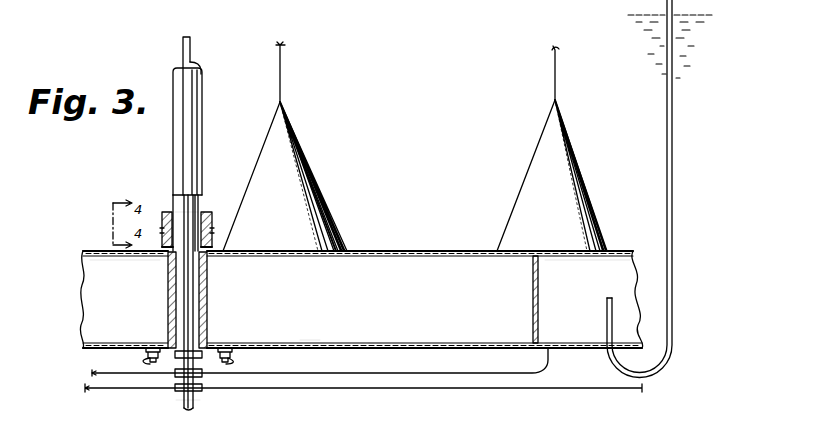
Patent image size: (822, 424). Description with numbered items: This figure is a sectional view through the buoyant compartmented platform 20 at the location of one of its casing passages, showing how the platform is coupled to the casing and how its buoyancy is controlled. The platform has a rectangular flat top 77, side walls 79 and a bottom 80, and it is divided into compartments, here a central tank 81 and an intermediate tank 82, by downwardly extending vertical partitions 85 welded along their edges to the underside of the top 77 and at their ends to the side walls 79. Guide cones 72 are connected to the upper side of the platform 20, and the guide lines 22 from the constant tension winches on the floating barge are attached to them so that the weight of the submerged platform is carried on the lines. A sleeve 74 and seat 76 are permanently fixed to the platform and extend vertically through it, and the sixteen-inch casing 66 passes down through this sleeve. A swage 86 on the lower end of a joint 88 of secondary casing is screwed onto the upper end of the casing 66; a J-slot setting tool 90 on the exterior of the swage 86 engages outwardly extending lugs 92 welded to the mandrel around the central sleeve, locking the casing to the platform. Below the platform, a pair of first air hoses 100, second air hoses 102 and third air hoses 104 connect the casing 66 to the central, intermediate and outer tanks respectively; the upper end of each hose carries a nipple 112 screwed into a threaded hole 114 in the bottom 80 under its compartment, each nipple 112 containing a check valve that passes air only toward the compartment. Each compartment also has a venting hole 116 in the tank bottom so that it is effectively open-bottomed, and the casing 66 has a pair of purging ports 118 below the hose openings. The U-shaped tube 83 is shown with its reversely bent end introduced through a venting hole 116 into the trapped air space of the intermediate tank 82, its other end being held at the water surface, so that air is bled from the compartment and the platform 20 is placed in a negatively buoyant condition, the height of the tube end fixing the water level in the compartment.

The buoyant compartmented platform 20 is at (391, 245).
The guide lines 22 is at (282, 67).
The 16″ casing 66 is at (193, 321).
The guide cones 72 is at (308, 176).
The sleeves 74 is at (207, 298).
The seats 76 is at (180, 250).
The rectangular flat top 77 is at (462, 252).
The side walls 79 is at (427, 355).
The bottom 80 is at (298, 343).
The central tanks 81 is at (110, 301).
The intermediate tanks 82 is at (595, 302).
The U-shaped tube 83 is at (672, 242).
The vertical partitions 85 is at (533, 310).
The swage 86 is at (173, 207).
The joint of secondary casing 88 is at (202, 95).
The J-slot setting tool 90 is at (236, 184).
The lugs 92 is at (212, 231).
The first air hoses 100 is at (153, 352).
The second air hoses 102 is at (93, 374).
The third air hoses 104 is at (86, 389).
The nipple 112 is at (544, 354).
The threaded hole 114 is at (551, 349).
The venting hole 116 is at (373, 343).
The purging ports 118 is at (172, 406).